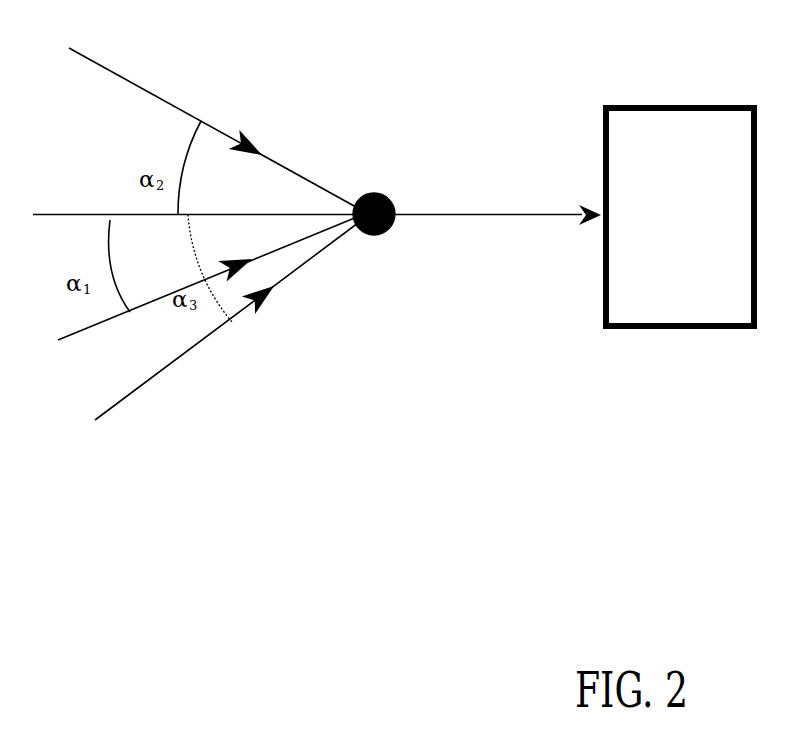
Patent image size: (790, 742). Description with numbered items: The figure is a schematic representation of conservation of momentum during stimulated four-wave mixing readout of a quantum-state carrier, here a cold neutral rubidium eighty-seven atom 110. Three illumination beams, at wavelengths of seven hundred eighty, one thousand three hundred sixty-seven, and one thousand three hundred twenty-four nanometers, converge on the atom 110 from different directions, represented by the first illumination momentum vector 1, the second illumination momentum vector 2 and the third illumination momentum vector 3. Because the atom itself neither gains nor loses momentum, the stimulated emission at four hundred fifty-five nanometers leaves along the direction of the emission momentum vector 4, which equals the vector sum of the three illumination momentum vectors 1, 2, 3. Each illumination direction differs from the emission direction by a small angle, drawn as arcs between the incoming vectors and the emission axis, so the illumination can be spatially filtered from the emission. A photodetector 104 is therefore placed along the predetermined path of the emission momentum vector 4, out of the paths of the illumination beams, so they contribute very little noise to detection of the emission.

The rubidium 87 atom 110 is at (376, 193).
The photodetector 104 is at (680, 217).
The momentum vector p1 1 is at (193, 287).
The momentum vector p2 2 is at (200, 122).
The momentum vector p3 3 is at (220, 342).
The momentum vector p4 4 is at (497, 210).